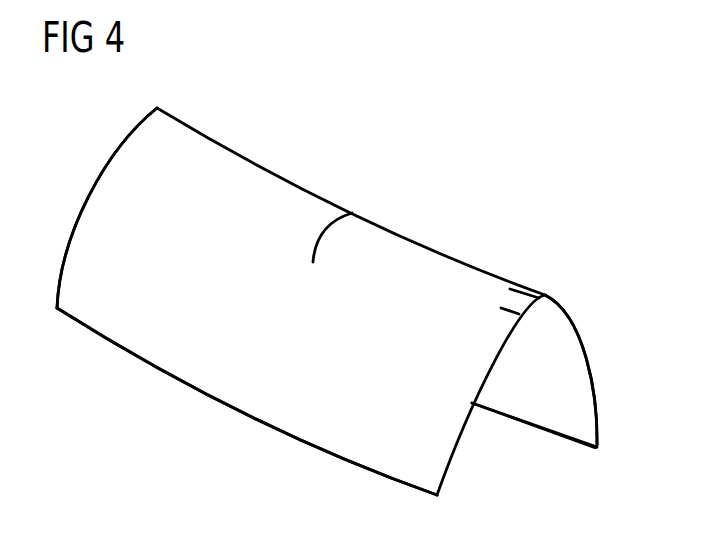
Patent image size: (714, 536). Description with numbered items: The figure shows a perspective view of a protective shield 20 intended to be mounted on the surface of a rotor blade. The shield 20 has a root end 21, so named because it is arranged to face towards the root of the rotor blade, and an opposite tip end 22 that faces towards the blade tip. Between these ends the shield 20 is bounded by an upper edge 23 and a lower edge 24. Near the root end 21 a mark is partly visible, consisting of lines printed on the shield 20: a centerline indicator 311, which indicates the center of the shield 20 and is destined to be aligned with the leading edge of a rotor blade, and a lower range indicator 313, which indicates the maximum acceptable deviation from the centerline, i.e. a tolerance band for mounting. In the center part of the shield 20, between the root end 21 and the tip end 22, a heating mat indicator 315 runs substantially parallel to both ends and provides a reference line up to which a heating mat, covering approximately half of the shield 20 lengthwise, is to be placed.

The shield 20 is at (388, 162).
The root end 21 is at (592, 355).
The tip end 22 is at (98, 164).
The upper edge 23 is at (527, 428).
The lower edge 24 is at (243, 413).
The centerline indicator 311 is at (531, 289).
The lower range indicator 313 is at (503, 312).
The heating mat indicator 315 is at (329, 244).